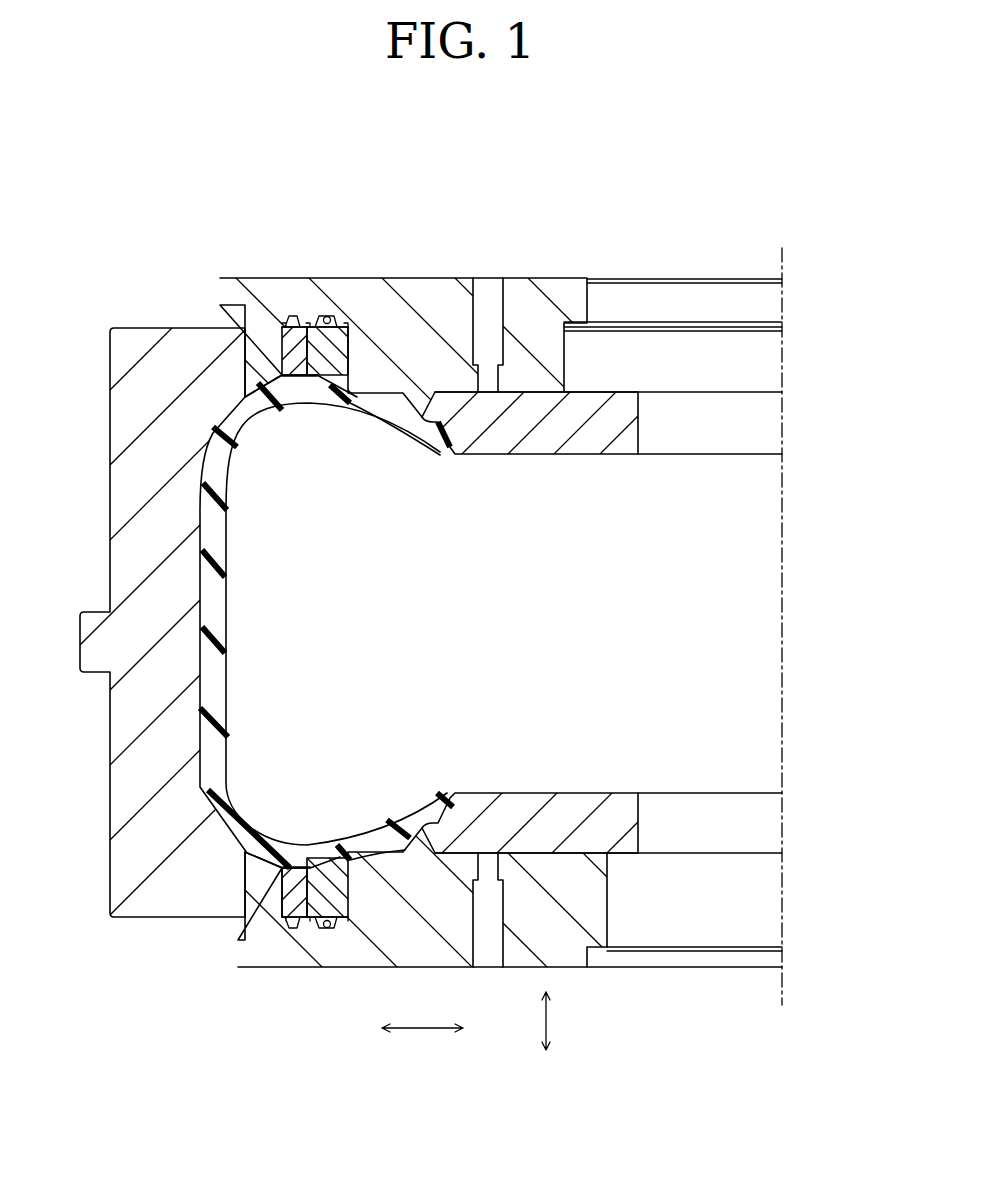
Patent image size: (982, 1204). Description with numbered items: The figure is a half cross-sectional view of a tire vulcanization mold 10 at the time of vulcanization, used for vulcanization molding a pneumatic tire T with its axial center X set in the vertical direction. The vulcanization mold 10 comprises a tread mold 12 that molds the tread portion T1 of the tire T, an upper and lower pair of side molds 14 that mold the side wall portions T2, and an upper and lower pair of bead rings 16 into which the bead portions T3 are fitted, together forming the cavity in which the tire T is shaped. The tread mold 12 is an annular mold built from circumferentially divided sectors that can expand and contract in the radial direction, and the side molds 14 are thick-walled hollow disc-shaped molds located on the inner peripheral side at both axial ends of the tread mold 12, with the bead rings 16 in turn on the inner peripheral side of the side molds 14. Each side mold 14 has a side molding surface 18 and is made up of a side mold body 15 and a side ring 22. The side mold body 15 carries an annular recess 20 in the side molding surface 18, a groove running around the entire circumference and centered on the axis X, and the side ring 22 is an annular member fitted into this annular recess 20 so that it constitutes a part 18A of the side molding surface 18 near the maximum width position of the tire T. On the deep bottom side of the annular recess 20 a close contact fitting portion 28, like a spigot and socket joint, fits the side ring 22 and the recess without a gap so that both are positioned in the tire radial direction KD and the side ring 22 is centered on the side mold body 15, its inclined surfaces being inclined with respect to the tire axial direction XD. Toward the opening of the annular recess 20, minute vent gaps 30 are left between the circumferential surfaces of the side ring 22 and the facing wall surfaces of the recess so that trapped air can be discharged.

The tire vulcanization mold 10 is at (394, 174).
The tread mold 12 is at (123, 438).
The side mold 14 is at (448, 283).
The side mold body 15 is at (408, 287).
The bead ring 16 is at (607, 440).
The side molding surface 18 is at (385, 392).
The part of side molding surface 18A is at (292, 400).
The annular recess 20 is at (320, 313).
The side ring 22 is at (360, 360).
The close contact fitting portion 28 is at (280, 317).
The vent gap 30 is at (265, 400).
The pneumatic tire T is at (241, 557).
The tread portion T1 is at (217, 630).
The side wall portion T2 is at (298, 378).
The bead portion T3 is at (433, 443).
The axial center X is at (787, 263).
The tire axial direction XD is at (568, 1021).
The tire radial direction KD is at (422, 1043).